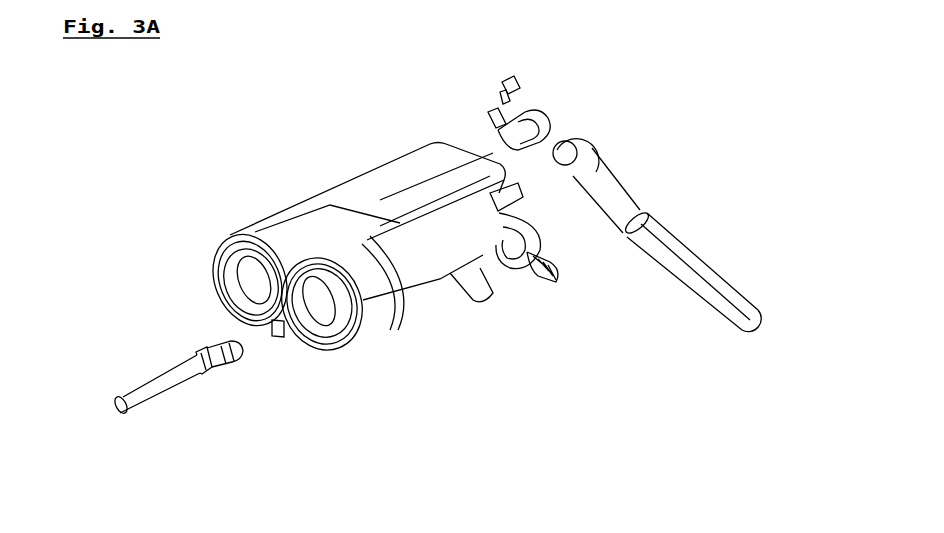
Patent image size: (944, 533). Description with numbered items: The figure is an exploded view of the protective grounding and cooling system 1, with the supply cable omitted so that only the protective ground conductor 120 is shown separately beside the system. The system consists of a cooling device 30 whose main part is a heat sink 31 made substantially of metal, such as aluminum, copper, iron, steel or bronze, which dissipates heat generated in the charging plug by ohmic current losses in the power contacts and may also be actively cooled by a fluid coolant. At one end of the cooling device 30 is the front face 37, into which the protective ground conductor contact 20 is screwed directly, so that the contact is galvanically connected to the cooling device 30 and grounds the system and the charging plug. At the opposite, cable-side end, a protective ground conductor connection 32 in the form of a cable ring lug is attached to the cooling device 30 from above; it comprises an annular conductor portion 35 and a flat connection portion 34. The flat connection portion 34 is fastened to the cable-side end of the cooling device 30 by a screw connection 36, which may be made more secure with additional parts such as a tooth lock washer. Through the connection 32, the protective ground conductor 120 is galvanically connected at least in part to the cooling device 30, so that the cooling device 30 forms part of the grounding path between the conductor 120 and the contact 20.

The protective grounding and cooling system 1 is at (210, 136).
The protective ground conductor contact 20 is at (160, 400).
The cooling device 30 is at (387, 320).
The heat sink 31 is at (444, 254).
The protective ground conductor connection 32 is at (533, 62).
The flat connection portion 34 is at (503, 130).
The annular conductor portion 35 is at (553, 128).
The screw connection 36 is at (503, 80).
The front face 37 is at (283, 265).
The protective ground conductor 120 is at (657, 237).